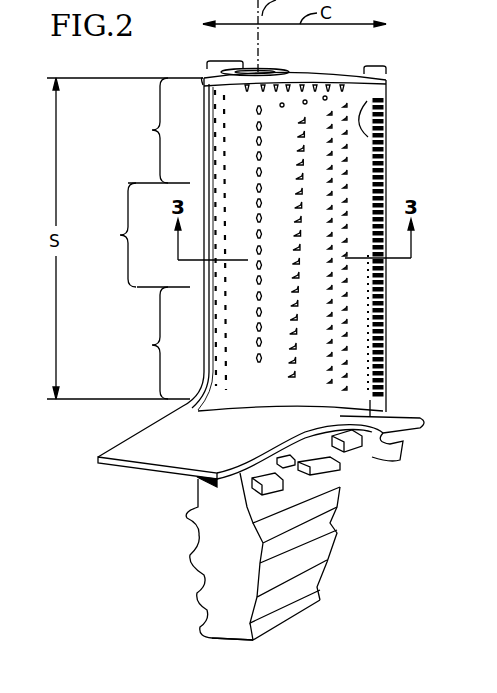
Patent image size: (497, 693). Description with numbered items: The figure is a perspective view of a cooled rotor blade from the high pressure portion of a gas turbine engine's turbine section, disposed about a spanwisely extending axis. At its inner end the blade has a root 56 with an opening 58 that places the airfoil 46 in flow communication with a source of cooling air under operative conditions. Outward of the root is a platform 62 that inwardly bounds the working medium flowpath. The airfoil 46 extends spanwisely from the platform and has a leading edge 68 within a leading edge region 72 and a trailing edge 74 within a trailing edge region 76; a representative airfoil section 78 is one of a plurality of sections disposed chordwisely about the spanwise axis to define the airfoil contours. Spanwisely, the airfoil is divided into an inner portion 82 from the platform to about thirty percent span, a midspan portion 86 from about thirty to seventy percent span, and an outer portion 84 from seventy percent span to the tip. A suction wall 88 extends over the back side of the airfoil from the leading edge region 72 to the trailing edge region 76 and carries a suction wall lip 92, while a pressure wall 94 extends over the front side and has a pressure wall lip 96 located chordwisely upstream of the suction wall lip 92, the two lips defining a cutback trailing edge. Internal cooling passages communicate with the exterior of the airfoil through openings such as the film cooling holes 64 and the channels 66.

The airfoil 46 is at (401, 105).
The root 56 is at (224, 548).
The opening 58 is at (226, 641).
The platform 62 is at (133, 451).
The film cooling holes 64 is at (363, 110).
The channels 66 is at (387, 122).
The leading edge 68 is at (204, 133).
The leading edge region 72 is at (222, 61).
The trailing edge 74 is at (386, 98).
The trailing edge region 76 is at (369, 66).
The airfoil section 78 is at (403, 259).
The inner portion 82 is at (143, 343).
The outer portion 84 is at (154, 130).
The midspan portion 86 is at (138, 235).
The suction wall 88 is at (281, 71).
The suction wall lip 92 is at (388, 161).
The pressure wall 94 is at (302, 246).
The pressure wall lip 96 is at (377, 294).